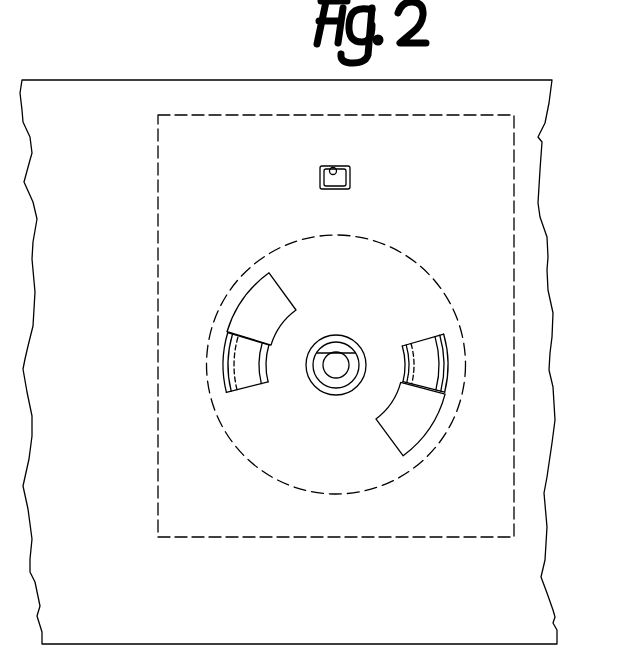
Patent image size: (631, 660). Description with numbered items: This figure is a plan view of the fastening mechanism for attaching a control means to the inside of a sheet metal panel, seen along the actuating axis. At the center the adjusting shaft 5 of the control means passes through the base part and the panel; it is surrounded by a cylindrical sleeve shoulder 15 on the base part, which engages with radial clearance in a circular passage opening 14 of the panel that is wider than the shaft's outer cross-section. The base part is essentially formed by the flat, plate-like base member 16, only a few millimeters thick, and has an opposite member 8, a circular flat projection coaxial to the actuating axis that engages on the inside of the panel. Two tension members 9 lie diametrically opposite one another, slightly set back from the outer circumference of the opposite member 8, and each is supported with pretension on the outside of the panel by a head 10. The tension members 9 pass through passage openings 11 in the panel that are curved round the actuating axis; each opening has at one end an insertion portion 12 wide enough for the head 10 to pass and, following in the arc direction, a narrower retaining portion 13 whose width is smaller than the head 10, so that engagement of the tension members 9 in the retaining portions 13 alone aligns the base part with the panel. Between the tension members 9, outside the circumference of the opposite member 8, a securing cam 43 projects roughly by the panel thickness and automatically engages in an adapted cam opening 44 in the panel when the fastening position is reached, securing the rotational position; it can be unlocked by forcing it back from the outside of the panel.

The adjusting shaft 5 is at (341, 352).
The opposite member 8 is at (408, 251).
The tension member 9 is at (271, 362).
The head 10 is at (249, 387).
The passage opening 11 is at (398, 381).
The insertion portion 12 is at (275, 298).
The retaining portion 13 is at (442, 348).
The circular passage opening 14 is at (338, 336).
The sleeve shoulder 15 is at (316, 380).
The base member 16 is at (513, 310).
The securing cam 43 is at (342, 176).
The cam opening 44 is at (333, 167).